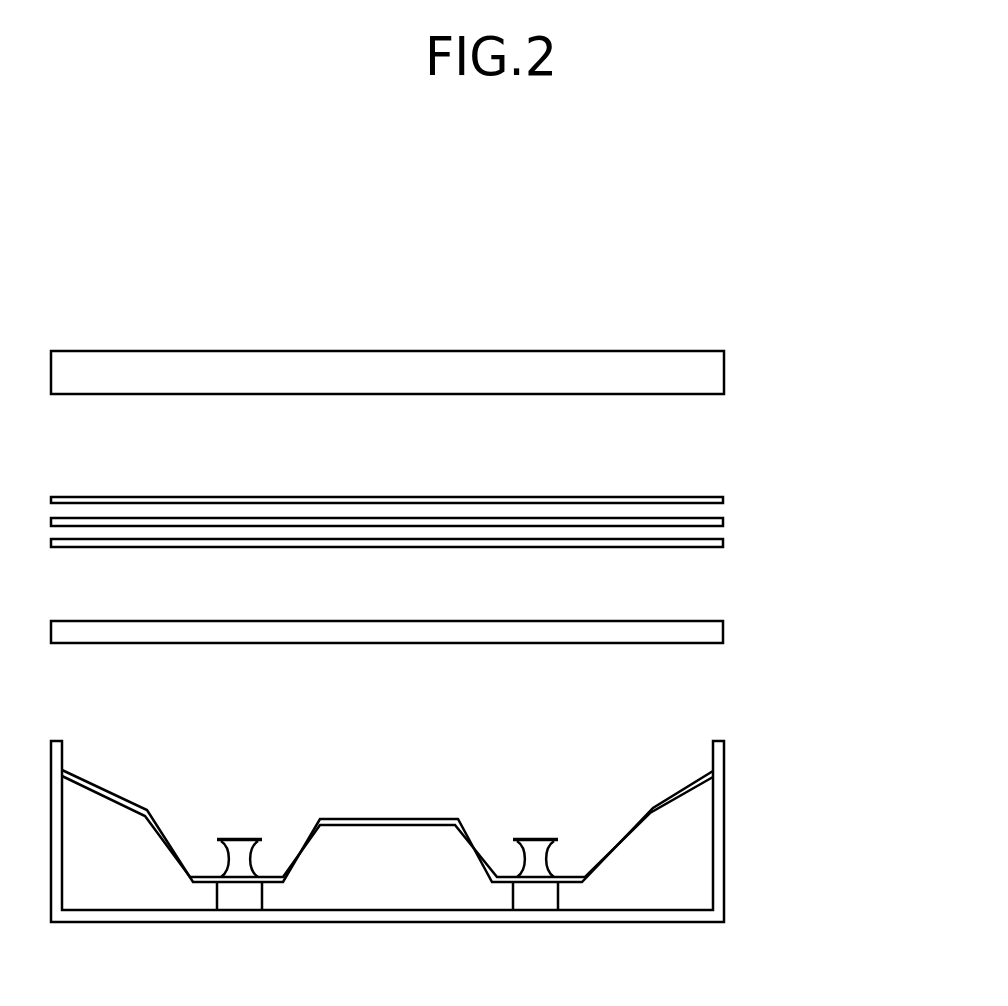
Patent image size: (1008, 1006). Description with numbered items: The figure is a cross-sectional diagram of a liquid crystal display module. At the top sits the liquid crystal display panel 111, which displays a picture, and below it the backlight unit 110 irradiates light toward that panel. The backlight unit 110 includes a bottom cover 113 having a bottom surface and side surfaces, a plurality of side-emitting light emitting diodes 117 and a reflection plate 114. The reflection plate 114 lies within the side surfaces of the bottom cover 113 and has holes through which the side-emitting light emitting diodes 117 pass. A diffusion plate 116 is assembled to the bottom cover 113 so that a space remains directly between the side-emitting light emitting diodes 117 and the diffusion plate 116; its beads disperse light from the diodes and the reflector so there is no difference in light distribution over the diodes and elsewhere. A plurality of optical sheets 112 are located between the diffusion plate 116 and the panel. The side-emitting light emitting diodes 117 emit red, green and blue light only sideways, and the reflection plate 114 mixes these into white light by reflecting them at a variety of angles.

The backlight unit 110 is at (833, 633).
The liquid crystal display panel 111 is at (707, 362).
The optical sheets 112 is at (735, 492).
The bottom cover 113 is at (718, 858).
The reflection plate 114 is at (667, 800).
The diffusion plate 116 is at (695, 636).
The side-emitting light emitting diodes 117 is at (538, 860).